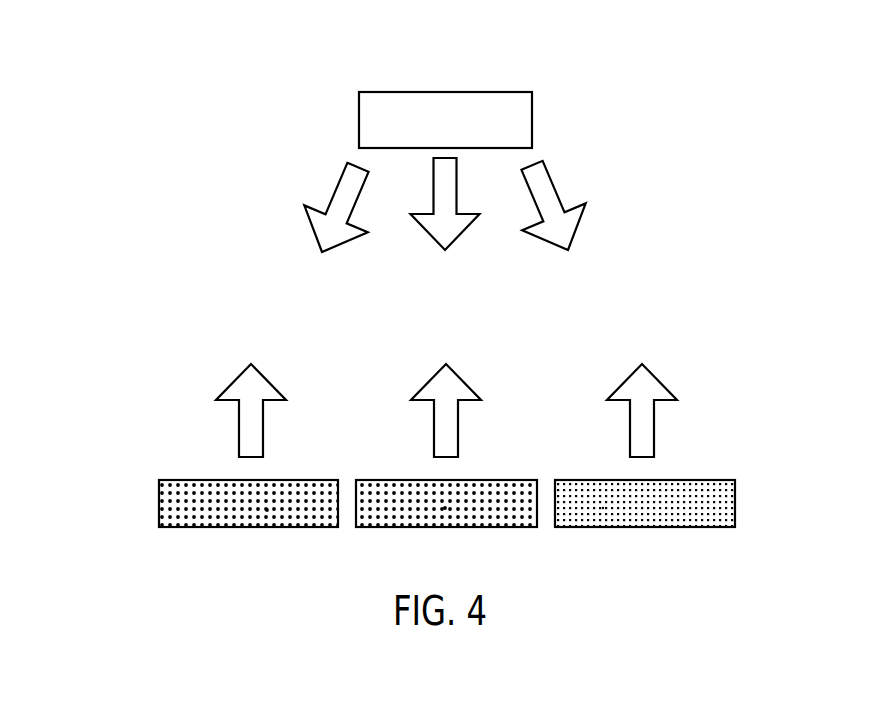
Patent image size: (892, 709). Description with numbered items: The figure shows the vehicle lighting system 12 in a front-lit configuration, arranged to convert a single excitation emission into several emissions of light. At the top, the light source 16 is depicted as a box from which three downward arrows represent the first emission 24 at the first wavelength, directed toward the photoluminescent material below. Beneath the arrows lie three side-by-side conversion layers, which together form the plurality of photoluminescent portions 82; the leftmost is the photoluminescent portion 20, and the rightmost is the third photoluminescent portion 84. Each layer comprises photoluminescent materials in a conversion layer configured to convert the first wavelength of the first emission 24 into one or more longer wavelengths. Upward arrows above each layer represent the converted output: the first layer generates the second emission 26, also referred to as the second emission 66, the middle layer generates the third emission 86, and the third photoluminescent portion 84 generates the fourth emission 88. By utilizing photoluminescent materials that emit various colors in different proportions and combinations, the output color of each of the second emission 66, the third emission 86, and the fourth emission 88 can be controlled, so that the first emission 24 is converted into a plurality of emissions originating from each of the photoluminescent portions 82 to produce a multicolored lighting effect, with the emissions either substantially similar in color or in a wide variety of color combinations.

The lighting system 12 is at (124, 106).
The light source 16 is at (445, 120).
The first emission 24 is at (360, 193).
The photoluminescent portion 20 is at (182, 485).
The second emission 26 is at (412, 485).
The third photoluminescent portion 84 is at (602, 485).
The plurality of photoluminescent portions 82 is at (603, 508).
The second emission 66 is at (235, 382).
The third emission 86 is at (435, 383).
The fourth emission 88 is at (627, 383).